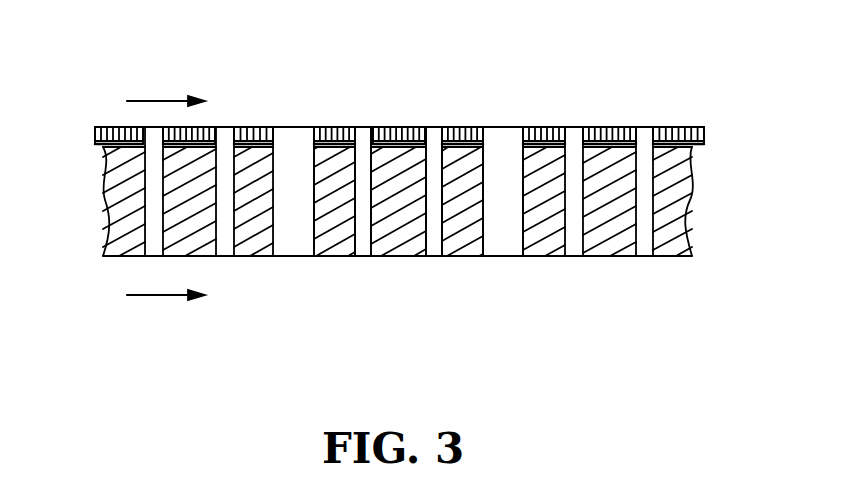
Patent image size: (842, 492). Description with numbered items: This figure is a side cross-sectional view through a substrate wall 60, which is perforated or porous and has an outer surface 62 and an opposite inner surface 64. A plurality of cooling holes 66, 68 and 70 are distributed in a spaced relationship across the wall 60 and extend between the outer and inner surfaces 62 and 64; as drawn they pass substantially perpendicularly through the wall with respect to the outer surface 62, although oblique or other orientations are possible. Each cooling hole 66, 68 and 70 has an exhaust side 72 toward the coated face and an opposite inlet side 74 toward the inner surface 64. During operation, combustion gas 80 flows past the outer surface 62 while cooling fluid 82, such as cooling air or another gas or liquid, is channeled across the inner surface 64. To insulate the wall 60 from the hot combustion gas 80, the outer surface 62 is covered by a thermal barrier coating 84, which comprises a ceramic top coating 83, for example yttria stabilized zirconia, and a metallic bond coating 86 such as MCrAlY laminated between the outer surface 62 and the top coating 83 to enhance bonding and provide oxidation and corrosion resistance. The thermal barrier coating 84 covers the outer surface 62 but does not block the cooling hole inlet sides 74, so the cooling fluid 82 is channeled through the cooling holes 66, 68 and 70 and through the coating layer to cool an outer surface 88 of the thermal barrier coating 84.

The substrate wall 60 is at (578, 282).
The outer surface 62 is at (254, 143).
The inner surface 64 is at (398, 187).
The cooling hole 66 is at (363, 240).
The cooling hole 68 is at (503, 233).
The cooling hole 70 is at (432, 152).
The exhaust side 72 is at (434, 245).
The inlet side 74 is at (293, 148).
The combustion gas 80 is at (167, 100).
The cooling fluid 82 is at (167, 297).
The top coating 83 is at (390, 135).
The thermal barrier coating 84 is at (374, 92).
The metallic bond coating 86 is at (595, 135).
The outer surface of TBC 88 is at (462, 128).